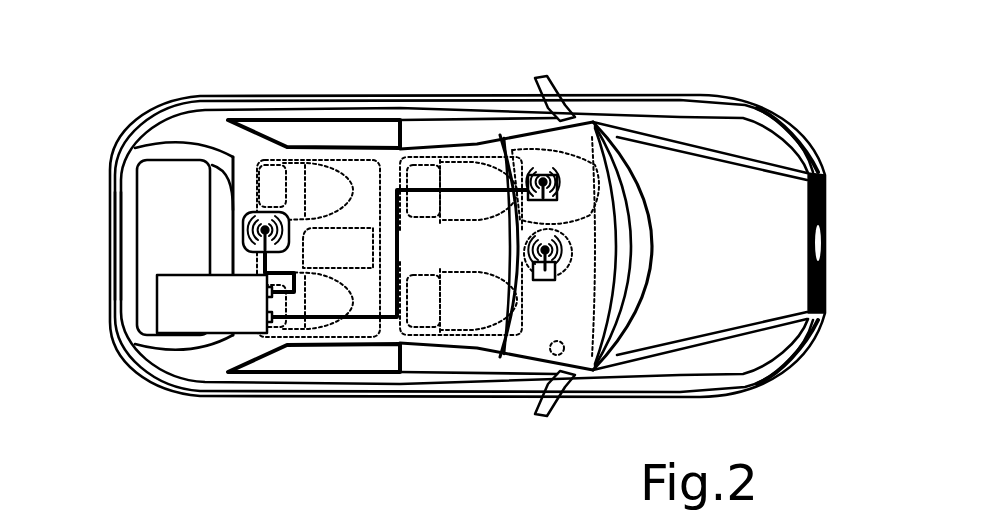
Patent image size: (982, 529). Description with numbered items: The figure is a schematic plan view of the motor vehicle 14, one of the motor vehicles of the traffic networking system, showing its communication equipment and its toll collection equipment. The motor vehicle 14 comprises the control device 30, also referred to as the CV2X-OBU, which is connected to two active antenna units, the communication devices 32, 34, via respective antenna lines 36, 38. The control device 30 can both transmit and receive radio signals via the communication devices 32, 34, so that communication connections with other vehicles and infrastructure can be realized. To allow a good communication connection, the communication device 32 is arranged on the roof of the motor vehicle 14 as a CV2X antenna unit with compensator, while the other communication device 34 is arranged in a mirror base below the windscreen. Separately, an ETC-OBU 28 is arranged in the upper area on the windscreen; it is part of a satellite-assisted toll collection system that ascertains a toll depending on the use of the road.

The motor vehicle 14 is at (745, 82).
The ETC-OBU 28 is at (550, 280).
The control device 30 is at (192, 336).
The communication device 32 is at (248, 256).
The communication device 34 is at (557, 194).
The antenna line 36 is at (160, 276).
The antenna line 38 is at (365, 318).